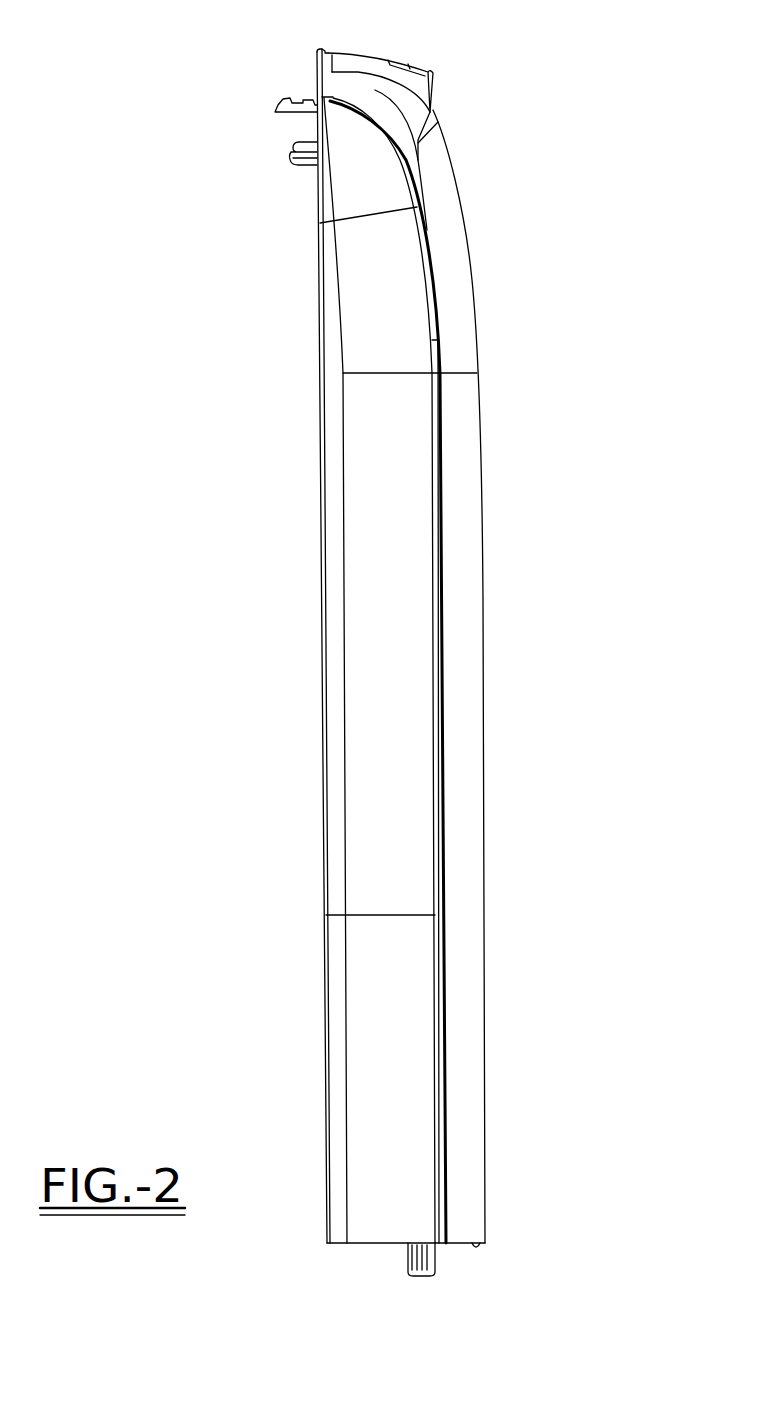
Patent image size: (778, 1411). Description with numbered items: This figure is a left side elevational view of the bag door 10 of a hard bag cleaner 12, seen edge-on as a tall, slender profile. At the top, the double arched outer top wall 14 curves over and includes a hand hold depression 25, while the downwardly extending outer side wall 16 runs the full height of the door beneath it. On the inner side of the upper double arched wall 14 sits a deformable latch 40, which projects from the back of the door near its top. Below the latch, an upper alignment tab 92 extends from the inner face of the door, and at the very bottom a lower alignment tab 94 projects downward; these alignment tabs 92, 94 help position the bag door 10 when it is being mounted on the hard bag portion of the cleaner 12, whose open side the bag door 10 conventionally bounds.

The bag door 10 is at (490, 731).
The hard bag cleaner 12 is at (505, 471).
The double arched outer top wall 14 is at (410, 98).
The outer side wall 16 is at (355, 517).
The hand hold depression 25 is at (408, 62).
The deformable latch 40 is at (282, 106).
The upper alignment tab 92 is at (303, 166).
The lower alignment tab 94 is at (437, 1268).